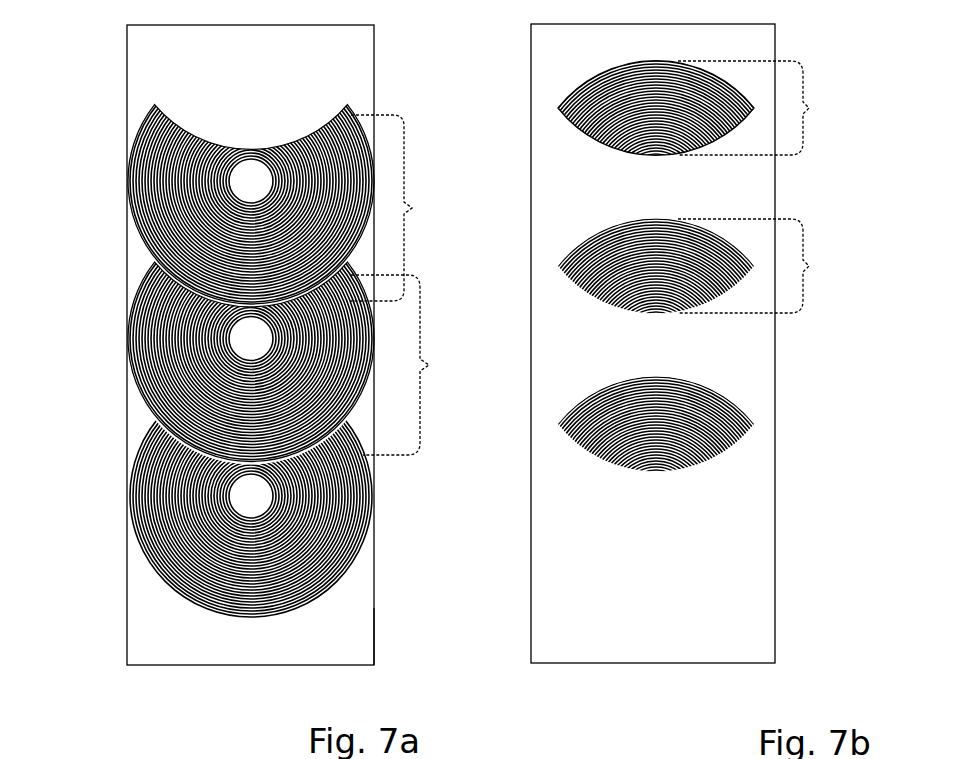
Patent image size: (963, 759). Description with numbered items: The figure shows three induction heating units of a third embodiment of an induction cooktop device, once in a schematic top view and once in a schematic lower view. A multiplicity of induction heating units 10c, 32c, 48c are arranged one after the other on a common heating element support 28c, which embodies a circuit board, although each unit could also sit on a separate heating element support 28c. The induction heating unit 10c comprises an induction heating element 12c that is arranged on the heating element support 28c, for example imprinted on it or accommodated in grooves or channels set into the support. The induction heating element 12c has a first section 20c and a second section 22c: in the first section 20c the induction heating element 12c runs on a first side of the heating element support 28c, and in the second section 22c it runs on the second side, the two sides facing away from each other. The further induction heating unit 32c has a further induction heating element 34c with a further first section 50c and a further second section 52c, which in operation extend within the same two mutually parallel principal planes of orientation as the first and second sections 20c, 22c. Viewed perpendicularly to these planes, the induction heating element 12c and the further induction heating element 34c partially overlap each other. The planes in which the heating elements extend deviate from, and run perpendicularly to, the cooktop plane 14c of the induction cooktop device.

In FIG. 7A, the induction heating unit 10c is at (116, 223).
In FIG. 7B, the induction heating unit 10c is at (516, 121).
In FIG. 7A, the induction heating element 12c is at (130, 146).
In FIG. 7B, the induction heating element 12c is at (708, 70).
In FIG. 7A, the cooktop plane 14c is at (338, 633).
In FIG. 7B, the first section 20c is at (770, 108).
In FIG. 7A, the second section 22c is at (411, 208).
In FIG. 7A, the heating element support 28c is at (159, 605).
In FIG. 7B, the heating element support 28c is at (722, 552).
In FIG. 7A, the further induction heating unit 32c is at (116, 372).
In FIG. 7A, the further induction heating element 34c is at (130, 296).
In FIG. 7B, the further induction heating element 34c is at (703, 228).
In FIG. 7A, the induction heating unit 48c is at (116, 535).
In FIG. 7B, the induction heating unit 48c is at (518, 456).
In FIG. 7B, the further first section 50c is at (770, 266).
In FIG. 7A, the further second section 52c is at (419, 365).